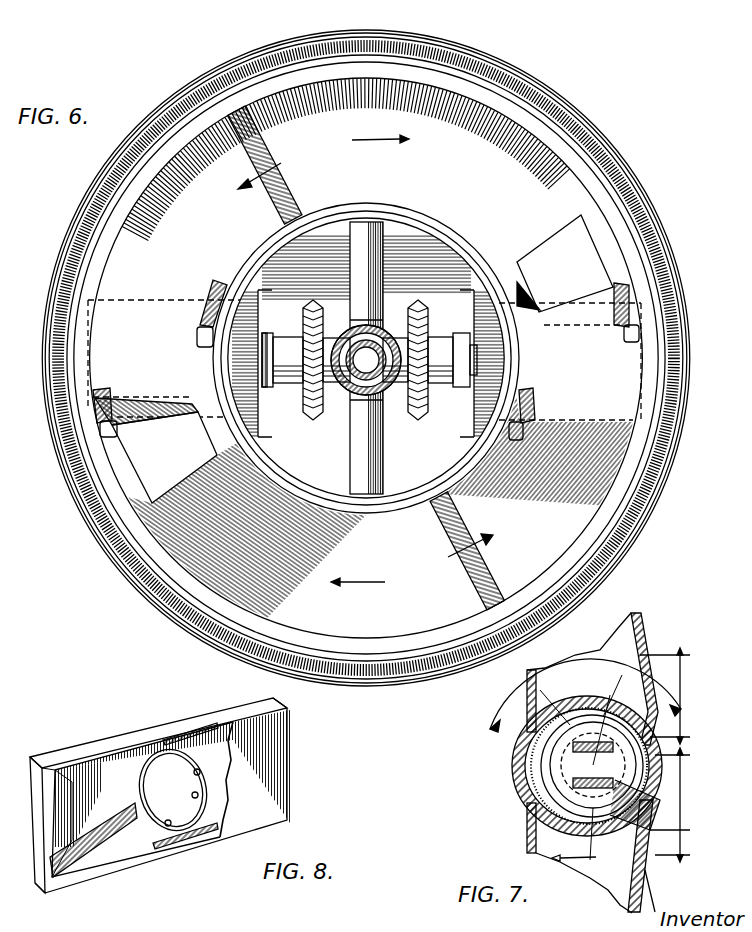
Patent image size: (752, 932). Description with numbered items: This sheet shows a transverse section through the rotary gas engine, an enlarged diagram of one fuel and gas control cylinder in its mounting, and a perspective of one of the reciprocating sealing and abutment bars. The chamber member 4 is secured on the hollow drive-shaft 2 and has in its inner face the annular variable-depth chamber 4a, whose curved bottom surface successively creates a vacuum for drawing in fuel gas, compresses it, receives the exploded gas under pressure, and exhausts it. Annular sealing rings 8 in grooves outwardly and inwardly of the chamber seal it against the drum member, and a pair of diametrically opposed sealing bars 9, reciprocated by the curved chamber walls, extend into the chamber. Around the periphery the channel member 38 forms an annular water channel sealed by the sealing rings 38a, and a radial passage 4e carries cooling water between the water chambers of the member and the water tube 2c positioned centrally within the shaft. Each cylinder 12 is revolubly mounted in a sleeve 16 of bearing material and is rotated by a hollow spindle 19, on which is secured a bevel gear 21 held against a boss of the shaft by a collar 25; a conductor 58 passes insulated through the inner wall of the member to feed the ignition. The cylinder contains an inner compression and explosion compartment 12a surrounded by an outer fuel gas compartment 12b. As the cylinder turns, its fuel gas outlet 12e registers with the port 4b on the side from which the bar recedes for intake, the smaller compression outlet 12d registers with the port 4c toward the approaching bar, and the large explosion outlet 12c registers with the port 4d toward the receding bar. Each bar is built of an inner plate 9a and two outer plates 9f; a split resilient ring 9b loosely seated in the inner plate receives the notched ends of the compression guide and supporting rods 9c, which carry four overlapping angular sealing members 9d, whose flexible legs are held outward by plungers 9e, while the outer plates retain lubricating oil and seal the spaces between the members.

In FIG. 6, the chamber member 4 is at (448, 88).
In FIG. 7, the chamber member 4 is at (643, 642).
In FIG. 6, the channel member 38 is at (593, 125).
In FIG. 6, the sealing ring 38a is at (606, 150).
In FIG. 6, the annular sealing ring 8 is at (626, 222).
In FIG. 6, the sealing bar 9 is at (283, 200).
In FIG. 6, the chamber 4a is at (193, 458).
In FIG. 6, the port 4b is at (107, 395).
In FIG. 7, the port 4b is at (640, 800).
In FIG. 6, the port 4c is at (549, 378).
In FIG. 6, the port 4d is at (533, 256).
In FIG. 6, the radial passage 4e is at (360, 262).
In FIG. 6, the drive-shaft 2 is at (385, 320).
In FIG. 6, the water tube 2c is at (343, 387).
In FIG. 6, the hollow spindle 19 is at (283, 340).
In FIG. 6, the bevel gear 21 is at (313, 305).
In FIG. 6, the collar 25 is at (263, 333).
In FIG. 6, the conductor 58 is at (270, 377).
In FIG. 7, the sleeve 16 is at (542, 755).
In FIG. 7, the cylinder 12 is at (543, 773).
In FIG. 7, the compression and explosion compartment 12a is at (553, 792).
In FIG. 7, the fuel gas compartment 12b is at (563, 805).
In FIG. 7, the explosion outlet 12c is at (637, 742).
In FIG. 7, the compression outlet 12d is at (570, 822).
In FIG. 7, the fuel gas outlet 12e is at (547, 827).
In FIG. 8, the inner plate 9a is at (95, 760).
In FIG. 8, the split resilient ring 9b is at (187, 735).
In FIG. 8, the compression guide and supporting rod 9c is at (98, 885).
In FIG. 8, the angular sealing member 9d is at (283, 700).
In FIG. 8, the plunger 9e is at (167, 740).
In FIG. 8, the outer plate 9f is at (62, 758).